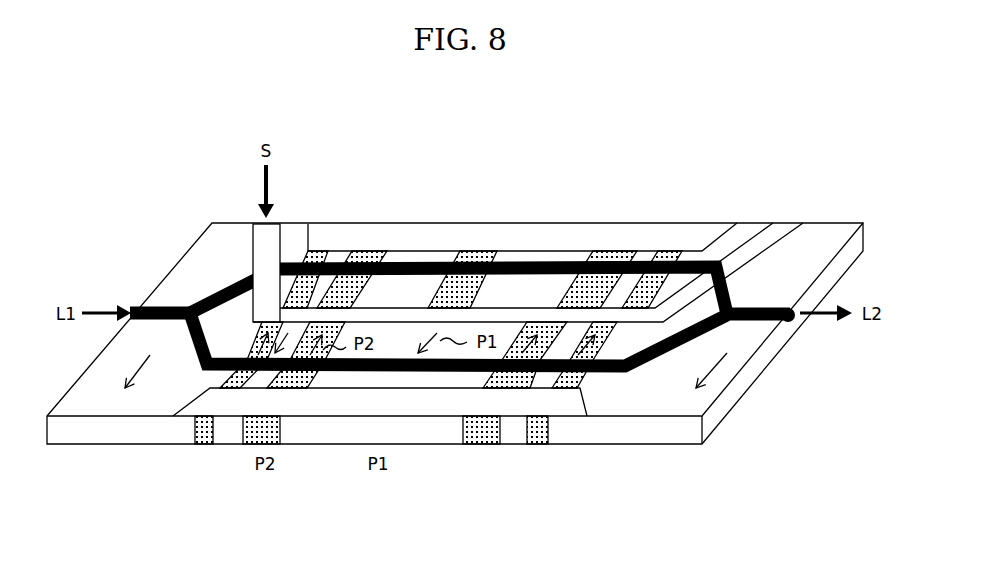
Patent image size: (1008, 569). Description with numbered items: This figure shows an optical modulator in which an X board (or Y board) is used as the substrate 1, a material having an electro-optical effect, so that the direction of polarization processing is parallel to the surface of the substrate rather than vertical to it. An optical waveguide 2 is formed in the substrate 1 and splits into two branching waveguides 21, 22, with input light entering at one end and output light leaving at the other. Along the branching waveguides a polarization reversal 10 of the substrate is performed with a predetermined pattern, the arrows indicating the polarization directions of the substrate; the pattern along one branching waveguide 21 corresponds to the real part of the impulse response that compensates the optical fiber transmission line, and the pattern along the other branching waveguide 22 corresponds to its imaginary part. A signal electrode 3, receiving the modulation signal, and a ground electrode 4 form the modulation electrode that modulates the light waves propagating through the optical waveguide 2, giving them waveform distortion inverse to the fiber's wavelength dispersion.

The substrate 1 is at (129, 403).
The optical waveguide 2 is at (462, 337).
The signal electrode 3 is at (265, 265).
The ground electrode 4 is at (650, 232).
The polarization reversal pattern 10 is at (435, 260).
The branching waveguide 21 is at (542, 258).
The branching waveguide 22 is at (440, 373).